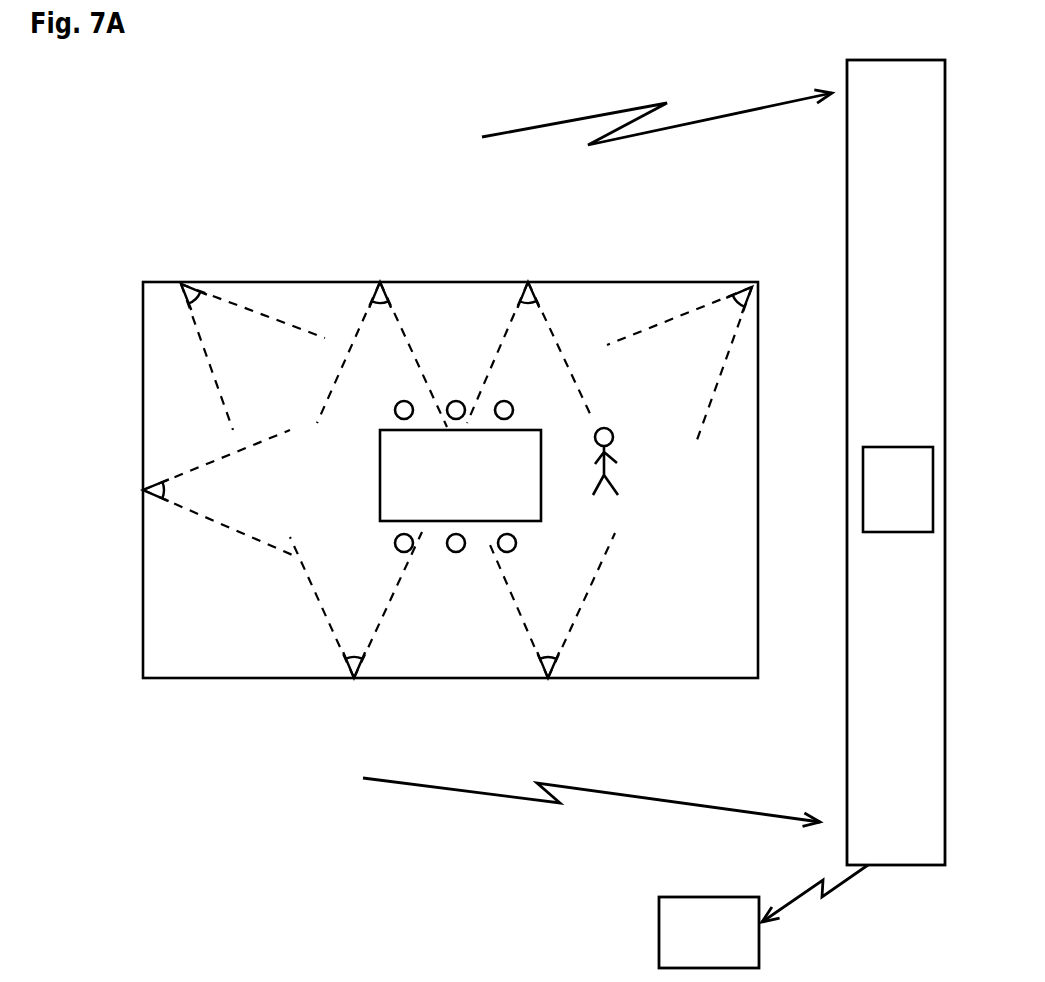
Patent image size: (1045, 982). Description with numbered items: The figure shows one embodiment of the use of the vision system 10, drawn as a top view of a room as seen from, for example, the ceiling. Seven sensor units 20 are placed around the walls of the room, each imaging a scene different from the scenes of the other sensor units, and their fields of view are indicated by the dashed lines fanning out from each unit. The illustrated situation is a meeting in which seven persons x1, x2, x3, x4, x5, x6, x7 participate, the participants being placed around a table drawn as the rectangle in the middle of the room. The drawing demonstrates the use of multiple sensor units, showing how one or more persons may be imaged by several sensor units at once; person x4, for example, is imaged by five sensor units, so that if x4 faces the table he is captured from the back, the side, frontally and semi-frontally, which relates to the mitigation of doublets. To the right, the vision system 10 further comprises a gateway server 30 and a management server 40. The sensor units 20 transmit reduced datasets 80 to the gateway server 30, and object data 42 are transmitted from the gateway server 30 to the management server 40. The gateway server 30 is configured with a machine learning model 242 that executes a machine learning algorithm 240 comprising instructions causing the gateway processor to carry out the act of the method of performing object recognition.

The vision system 10 is at (233, 170).
The sensor units 20 is at (735, 287).
The gateway server 30 is at (910, 408).
The management server 40 is at (727, 949).
The object data 42 is at (820, 902).
The reduced datasets 80 is at (597, 458).
The machine learning algorithm 240 is at (920, 500).
The machine learning model 242 is at (903, 529).
The person x1 is at (395, 406).
The person x2 is at (455, 400).
The person x3 is at (505, 401).
The person x4 is at (395, 543).
The person x5 is at (456, 553).
The person x6 is at (517, 543).
The person x7 is at (612, 432).